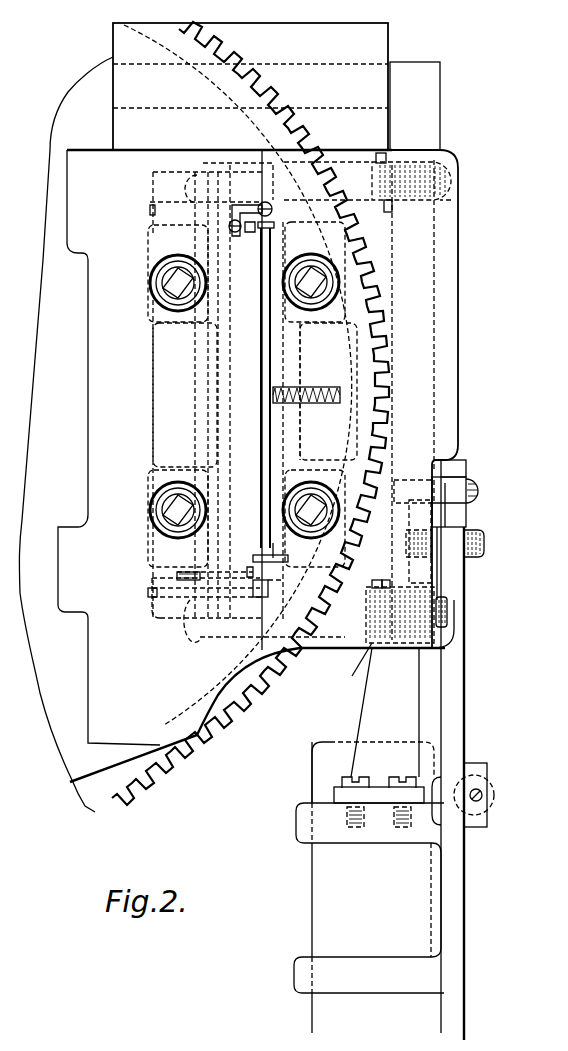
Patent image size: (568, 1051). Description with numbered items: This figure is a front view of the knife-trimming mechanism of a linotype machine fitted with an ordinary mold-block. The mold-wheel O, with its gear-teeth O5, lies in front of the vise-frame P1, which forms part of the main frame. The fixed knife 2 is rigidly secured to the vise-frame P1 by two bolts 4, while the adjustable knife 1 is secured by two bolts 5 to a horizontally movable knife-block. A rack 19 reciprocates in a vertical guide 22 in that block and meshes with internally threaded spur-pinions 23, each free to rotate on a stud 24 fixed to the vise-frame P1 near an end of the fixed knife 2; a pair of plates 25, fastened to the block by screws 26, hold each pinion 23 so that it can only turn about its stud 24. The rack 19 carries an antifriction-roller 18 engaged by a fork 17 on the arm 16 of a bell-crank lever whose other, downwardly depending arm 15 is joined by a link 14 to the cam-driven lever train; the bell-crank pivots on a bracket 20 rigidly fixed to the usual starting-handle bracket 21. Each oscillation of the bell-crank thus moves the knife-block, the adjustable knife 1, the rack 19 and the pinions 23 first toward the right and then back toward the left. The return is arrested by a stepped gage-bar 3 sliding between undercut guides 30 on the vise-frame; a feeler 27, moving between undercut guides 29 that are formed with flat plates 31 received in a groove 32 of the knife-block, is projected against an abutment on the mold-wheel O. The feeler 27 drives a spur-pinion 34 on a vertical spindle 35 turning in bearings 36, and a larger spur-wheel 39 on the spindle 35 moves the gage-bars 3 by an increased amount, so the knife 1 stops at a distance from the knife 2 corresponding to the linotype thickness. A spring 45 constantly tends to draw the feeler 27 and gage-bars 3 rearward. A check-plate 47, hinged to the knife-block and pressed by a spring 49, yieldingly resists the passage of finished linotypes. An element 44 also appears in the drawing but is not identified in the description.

The adjustable knife 1 is at (350, 245).
The fixed knife 2 is at (178, 328).
The gage-bar 3 is at (293, 622).
The bolts 4 is at (178, 396).
The bolts 5 is at (314, 394).
The link 14 is at (490, 795).
The downwardly-depending arm of bell-crank lever 15 is at (455, 696).
The arm of bell-crank lever 16 is at (452, 560).
The fork 17 is at (466, 466).
The antifriction-roller 18 is at (476, 486).
The rack 19 is at (415, 106).
The bracket 20 is at (379, 737).
The starting-handle bracket 21 is at (461, 883).
The vertical guide 22 is at (458, 320).
The threaded pinion 23 is at (457, 210).
The stud 24 is at (464, 178).
The plates 25 is at (394, 213).
The screws 26 is at (353, 667).
The feeler 27 is at (206, 564).
The undercut guides 29 is at (260, 542).
The undercut guides 30 is at (258, 230).
The flat plate 31 is at (277, 553).
The groove 32 is at (270, 598).
The spur-pinion 34 is at (177, 572).
The vertical spindle 35 is at (195, 377).
The bearings 36 is at (192, 232).
The spur-wheel 39 is at (150, 208).
The screw 44 is at (268, 205).
The spring 45 is at (230, 223).
The check-plate 47 is at (273, 373).
The spring 49 is at (313, 407).
The mold-wheel O is at (232, 434).
The gear-teeth O5 is at (238, 378).
The vise-frame P1 is at (225, 384).